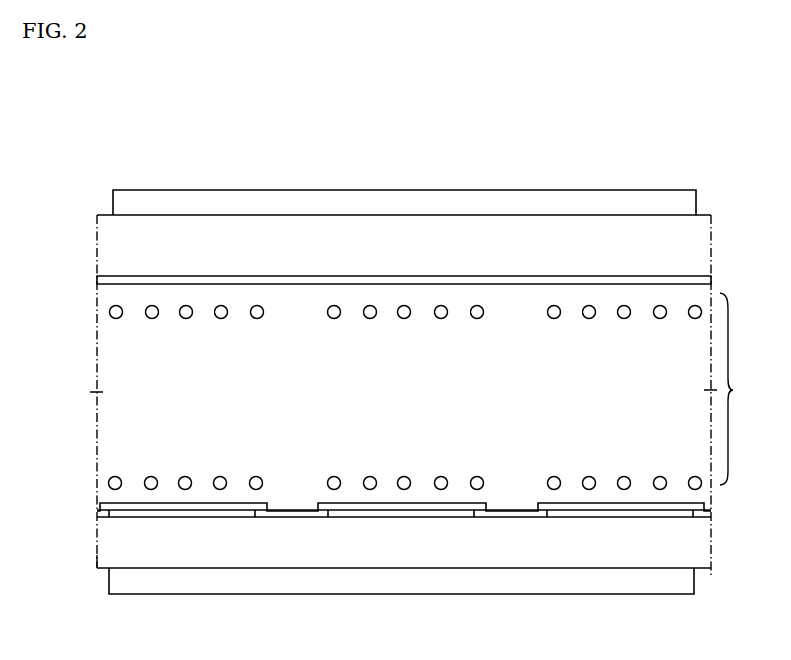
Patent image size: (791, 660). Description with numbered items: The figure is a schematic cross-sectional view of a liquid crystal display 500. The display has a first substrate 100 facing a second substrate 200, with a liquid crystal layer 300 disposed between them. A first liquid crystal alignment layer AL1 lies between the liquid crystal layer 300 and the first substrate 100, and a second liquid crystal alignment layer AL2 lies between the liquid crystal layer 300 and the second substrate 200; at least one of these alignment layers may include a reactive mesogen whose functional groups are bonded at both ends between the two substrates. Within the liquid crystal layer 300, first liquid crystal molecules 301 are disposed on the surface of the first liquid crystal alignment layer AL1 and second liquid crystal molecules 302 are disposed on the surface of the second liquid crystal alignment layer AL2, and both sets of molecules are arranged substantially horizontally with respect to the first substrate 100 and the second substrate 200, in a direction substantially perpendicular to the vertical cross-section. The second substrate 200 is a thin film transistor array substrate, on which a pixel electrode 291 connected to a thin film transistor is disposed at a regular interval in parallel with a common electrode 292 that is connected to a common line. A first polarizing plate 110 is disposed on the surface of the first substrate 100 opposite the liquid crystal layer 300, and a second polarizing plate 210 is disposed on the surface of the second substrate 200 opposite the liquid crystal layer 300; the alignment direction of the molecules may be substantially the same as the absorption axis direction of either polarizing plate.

The liquid crystal display 500 is at (430, 103).
The first polarizing plate 110 is at (113, 199).
The first substrate 100 is at (103, 241).
The first liquid crystal alignment layer AL1 is at (97, 280).
The liquid crystal layer 300 is at (746, 389).
The first liquid crystal molecules 301 is at (109, 313).
The second liquid crystal molecules 302 is at (109, 481).
The second liquid crystal alignment layer AL2 is at (97, 506).
The pixel electrode 291 is at (122, 517).
The common electrode 292 is at (400, 517).
The second substrate 200 is at (97, 560).
The second polarizing plate 210 is at (110, 589).